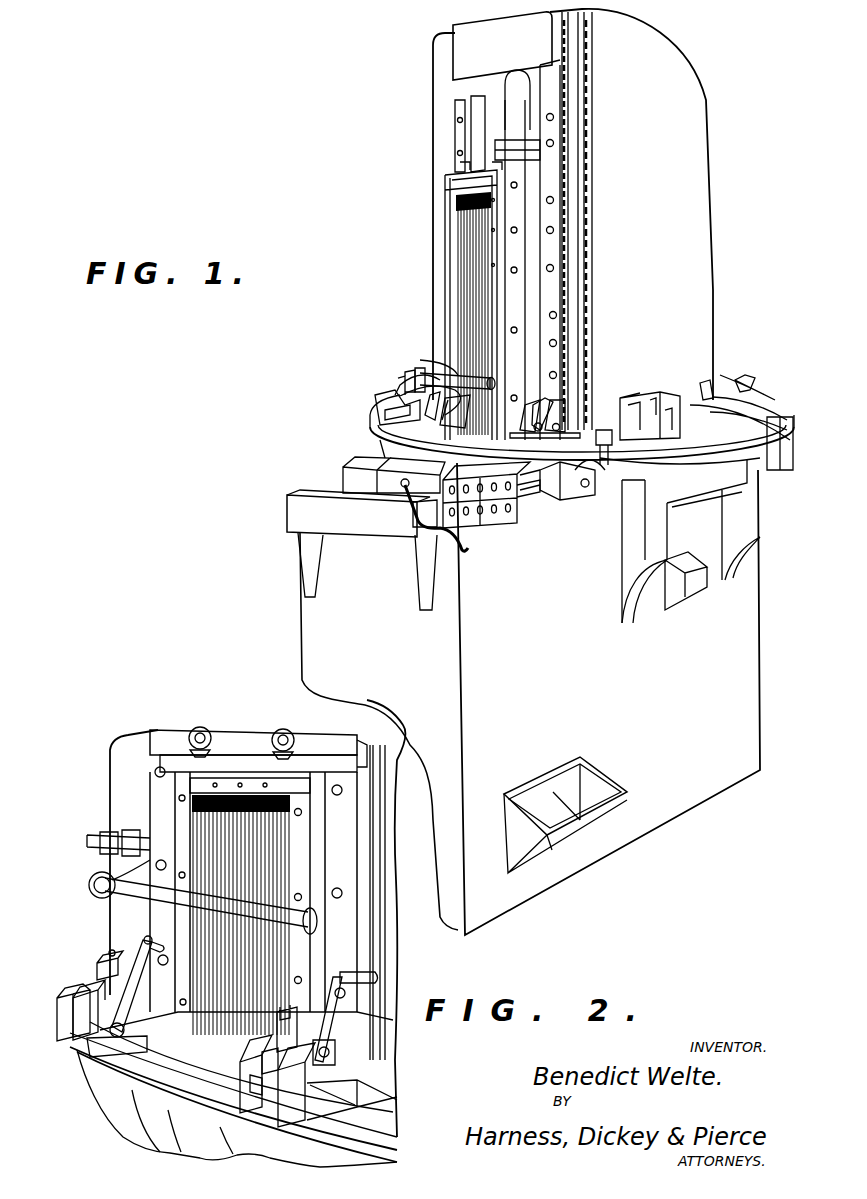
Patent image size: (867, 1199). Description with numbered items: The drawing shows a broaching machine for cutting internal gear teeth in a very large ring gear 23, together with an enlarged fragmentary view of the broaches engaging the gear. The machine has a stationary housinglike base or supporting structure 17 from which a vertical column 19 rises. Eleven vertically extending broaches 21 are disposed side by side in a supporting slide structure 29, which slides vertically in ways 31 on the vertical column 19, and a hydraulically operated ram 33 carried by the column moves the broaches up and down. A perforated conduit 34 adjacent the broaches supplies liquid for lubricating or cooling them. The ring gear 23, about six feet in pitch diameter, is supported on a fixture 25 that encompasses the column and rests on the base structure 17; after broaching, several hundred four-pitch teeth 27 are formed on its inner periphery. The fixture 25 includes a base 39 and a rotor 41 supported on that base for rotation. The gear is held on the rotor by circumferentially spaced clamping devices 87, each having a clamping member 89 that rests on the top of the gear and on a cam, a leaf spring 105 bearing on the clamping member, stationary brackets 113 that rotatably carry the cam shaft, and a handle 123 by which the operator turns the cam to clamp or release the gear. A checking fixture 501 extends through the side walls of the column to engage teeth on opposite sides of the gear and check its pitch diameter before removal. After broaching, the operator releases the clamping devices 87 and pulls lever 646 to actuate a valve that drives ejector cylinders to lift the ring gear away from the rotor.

In FIG. 1, the housinglike base or supporting structure 17 is at (737, 676).
In FIG. 1, the vertical column 19 is at (687, 107).
In FIG. 2, the vertical column 19 is at (125, 750).
In FIG. 1, the broaches 21 is at (462, 236).
In FIG. 2, the broaches 21 is at (278, 862).
In FIG. 1, the ring gear 23 is at (648, 460).
In FIG. 2, the ring gear 23 is at (223, 1040).
In FIG. 1, the fixture 25 is at (607, 462).
In FIG. 2, the fixture 25 is at (373, 1125).
In FIG. 1, the four-pitch teeth 27 is at (725, 382).
In FIG. 1, the supporting slide structure 29 is at (445, 200).
In FIG. 1, the ways 31 is at (473, 135).
In FIG. 1, the hydraulically operated ram 33 is at (513, 125).
In FIG. 1, the perforated conduit 34 is at (455, 378).
In FIG. 2, the perforated conduit 34 is at (140, 903).
In FIG. 2, the base 39 is at (140, 1090).
In FIG. 1, the rotor 41 is at (657, 450).
In FIG. 2, the rotor 41 is at (177, 1055).
In FIG. 2, the clamping devices 87 is at (220, 1088).
In FIG. 2, the clamping member 89 is at (75, 990).
In FIG. 2, the leaf spring 105 is at (93, 960).
In FIG. 1, the stationary brackets 113 is at (626, 443).
In FIG. 2, the stationary brackets 113 is at (287, 1103).
In FIG. 1, the handle 123 is at (550, 398).
In FIG. 2, the handle 123 is at (377, 973).
In FIG. 1, the checking fixture 501 is at (645, 398).
In FIG. 1, the lever 646 is at (420, 505).